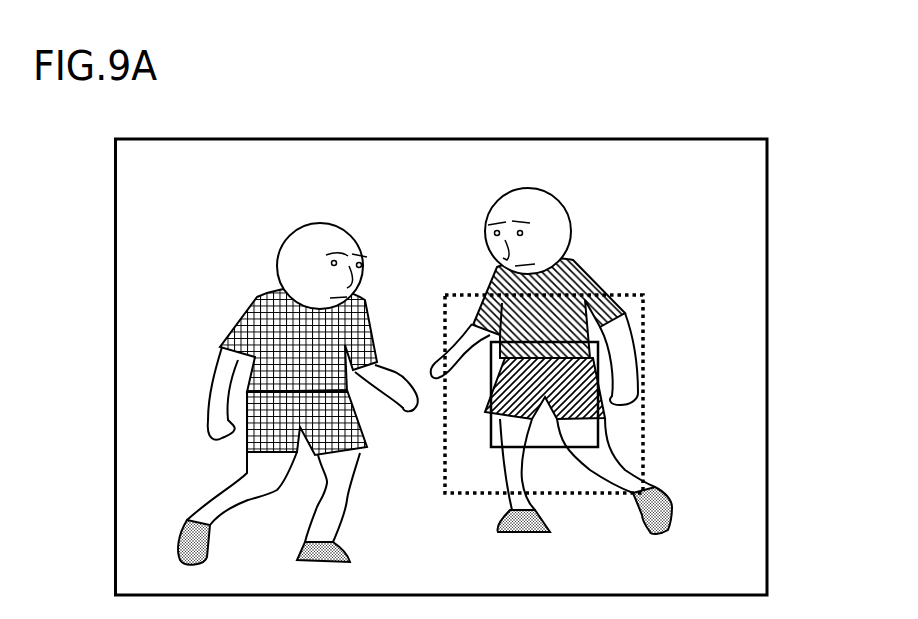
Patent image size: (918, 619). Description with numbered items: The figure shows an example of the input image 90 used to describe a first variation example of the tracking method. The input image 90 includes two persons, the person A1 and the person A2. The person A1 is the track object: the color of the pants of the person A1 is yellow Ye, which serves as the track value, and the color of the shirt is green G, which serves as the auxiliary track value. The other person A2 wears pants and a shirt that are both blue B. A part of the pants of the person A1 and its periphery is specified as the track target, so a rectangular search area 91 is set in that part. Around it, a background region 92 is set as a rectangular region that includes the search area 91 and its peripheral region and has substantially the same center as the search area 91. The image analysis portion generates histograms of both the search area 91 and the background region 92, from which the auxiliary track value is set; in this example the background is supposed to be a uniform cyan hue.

The input image 90 is at (767, 139).
The search area 91 is at (545, 452).
The background region 92 is at (645, 320).
The person A1 is at (557, 313).
The person A2 is at (298, 336).
The blue B is at (247, 317).
The green G is at (583, 288).
The yellow Ye is at (600, 390).